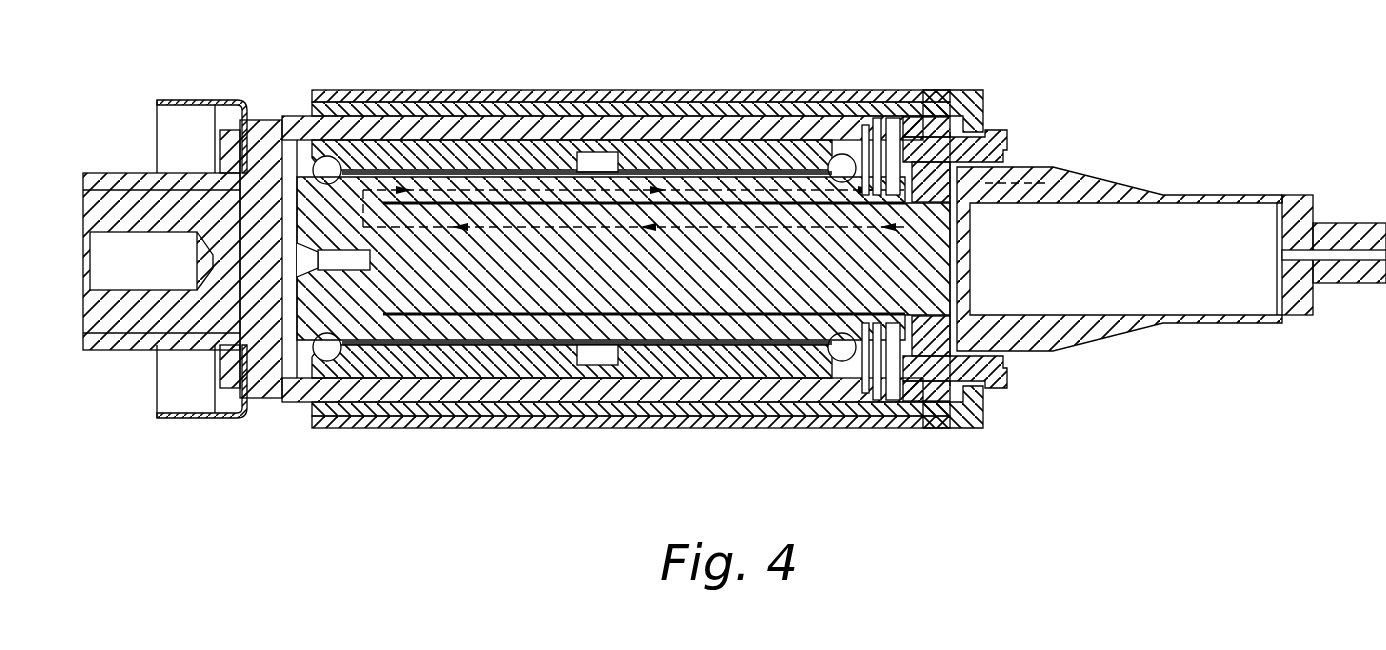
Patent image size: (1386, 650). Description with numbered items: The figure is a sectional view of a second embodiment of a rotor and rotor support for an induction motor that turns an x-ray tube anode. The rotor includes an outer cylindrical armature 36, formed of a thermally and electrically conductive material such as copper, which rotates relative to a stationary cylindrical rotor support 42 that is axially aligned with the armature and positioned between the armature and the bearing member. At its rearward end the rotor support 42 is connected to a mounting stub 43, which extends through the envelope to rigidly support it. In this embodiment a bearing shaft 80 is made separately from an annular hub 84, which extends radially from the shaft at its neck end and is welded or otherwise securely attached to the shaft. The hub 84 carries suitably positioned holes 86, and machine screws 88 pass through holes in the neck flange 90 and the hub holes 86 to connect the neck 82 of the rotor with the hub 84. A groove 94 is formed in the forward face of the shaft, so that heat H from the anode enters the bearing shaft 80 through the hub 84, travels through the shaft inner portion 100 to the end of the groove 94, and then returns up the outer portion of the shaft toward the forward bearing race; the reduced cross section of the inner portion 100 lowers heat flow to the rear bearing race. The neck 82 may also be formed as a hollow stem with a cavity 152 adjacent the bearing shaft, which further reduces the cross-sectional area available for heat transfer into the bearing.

The armature 36 is at (550, 408).
The rotor support 42 is at (535, 135).
The mounting stub 43 is at (90, 208).
The bearing shaft 80 is at (679, 262).
The neck 82 is at (1073, 325).
The annular hub 84 is at (920, 395).
The hub holes 86 is at (1007, 148).
The machine screws 88 is at (1003, 376).
The neck flange 90 is at (985, 408).
The groove 94 is at (452, 190).
The shaft inner portion 100 is at (488, 285).
The cavity 152 is at (1184, 268).
The heat H is at (696, 182).